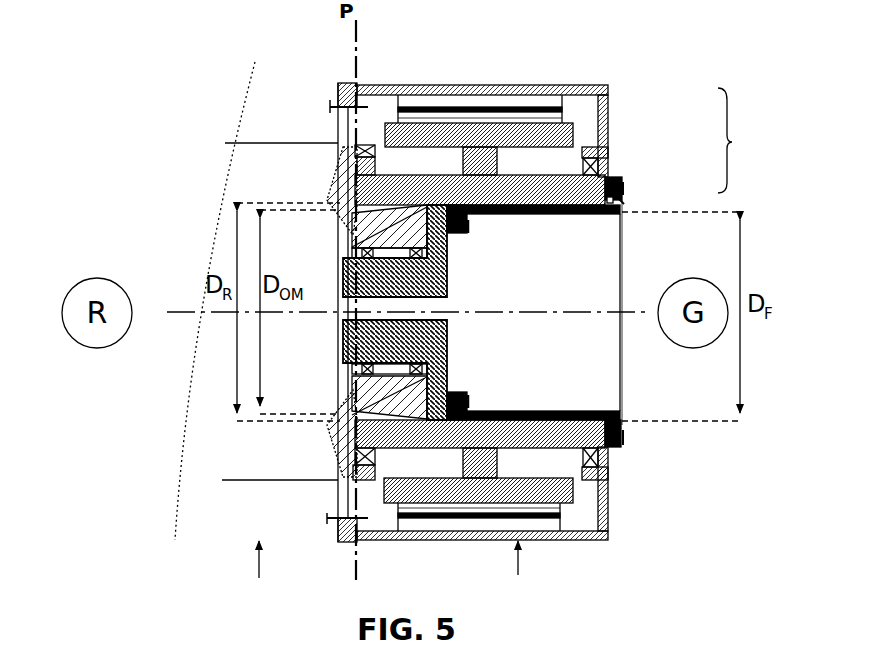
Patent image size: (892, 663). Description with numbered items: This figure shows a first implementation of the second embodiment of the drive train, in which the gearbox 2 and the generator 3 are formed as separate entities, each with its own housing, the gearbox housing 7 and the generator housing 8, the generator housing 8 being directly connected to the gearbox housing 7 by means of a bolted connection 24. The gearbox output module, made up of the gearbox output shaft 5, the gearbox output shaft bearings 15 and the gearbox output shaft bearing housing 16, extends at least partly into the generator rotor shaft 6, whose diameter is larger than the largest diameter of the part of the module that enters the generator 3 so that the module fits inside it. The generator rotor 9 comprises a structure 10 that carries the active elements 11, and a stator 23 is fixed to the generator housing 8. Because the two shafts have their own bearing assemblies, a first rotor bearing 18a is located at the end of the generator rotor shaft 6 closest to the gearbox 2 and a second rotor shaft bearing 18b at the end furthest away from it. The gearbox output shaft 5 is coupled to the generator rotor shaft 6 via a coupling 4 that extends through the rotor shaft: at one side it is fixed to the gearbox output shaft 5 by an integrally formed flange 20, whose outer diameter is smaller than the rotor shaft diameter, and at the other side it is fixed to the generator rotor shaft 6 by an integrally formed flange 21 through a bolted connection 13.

The gearbox 2 is at (256, 576).
The generator 3 is at (518, 576).
The coupling 4 is at (567, 210).
The gearbox output shaft 5 is at (432, 232).
The generator rotor shaft 6 is at (624, 188).
The gearbox housing 7 is at (334, 157).
The generator housing 8 is at (605, 97).
The generator rotor 9 is at (736, 140).
The structure 10 is at (497, 157).
The active elements 11 is at (553, 118).
The bolted connection 13 is at (624, 437).
The gearbox output shaft bearing arrangement 15 is at (380, 240).
The gearbox output shaft bearing housing 16 is at (358, 242).
The first rotor bearing 18a is at (332, 102).
The second rotor shaft bearing 18b is at (592, 458).
The flange 20 is at (466, 212).
The flange 21 is at (622, 200).
The stator 23 is at (530, 107).
The bolted connection 24 is at (327, 525).